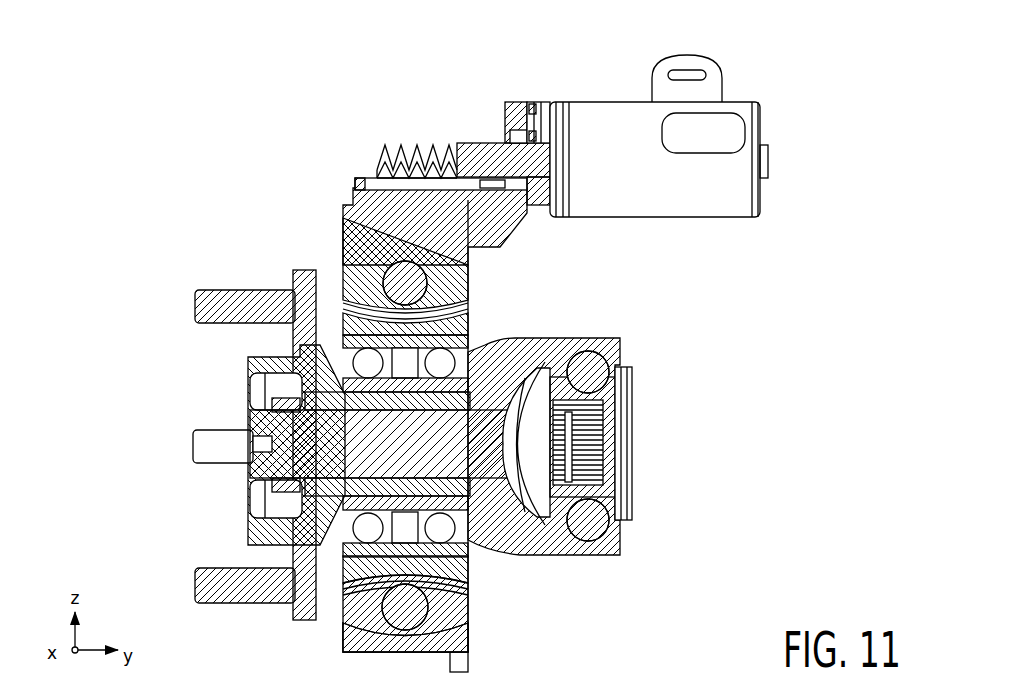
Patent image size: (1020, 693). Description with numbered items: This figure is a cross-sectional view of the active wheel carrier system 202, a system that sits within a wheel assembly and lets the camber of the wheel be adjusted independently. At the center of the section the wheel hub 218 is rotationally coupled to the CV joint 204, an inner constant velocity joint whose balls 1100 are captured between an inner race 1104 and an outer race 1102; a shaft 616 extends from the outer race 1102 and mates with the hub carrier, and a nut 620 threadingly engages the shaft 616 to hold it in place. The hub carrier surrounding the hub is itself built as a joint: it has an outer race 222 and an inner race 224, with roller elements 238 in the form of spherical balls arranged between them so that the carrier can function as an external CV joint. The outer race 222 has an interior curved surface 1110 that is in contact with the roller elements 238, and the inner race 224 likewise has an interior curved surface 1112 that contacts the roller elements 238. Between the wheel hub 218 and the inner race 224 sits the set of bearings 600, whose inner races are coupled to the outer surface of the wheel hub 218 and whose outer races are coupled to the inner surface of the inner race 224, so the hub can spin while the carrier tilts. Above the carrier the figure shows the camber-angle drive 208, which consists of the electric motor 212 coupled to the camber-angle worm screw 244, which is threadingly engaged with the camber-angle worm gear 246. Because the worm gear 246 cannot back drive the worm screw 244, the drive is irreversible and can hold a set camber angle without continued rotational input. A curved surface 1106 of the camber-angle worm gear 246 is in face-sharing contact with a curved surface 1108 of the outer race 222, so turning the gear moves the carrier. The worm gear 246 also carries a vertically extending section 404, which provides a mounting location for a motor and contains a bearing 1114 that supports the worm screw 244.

The active wheel carrier system 202 is at (130, 125).
The CV joint 204 is at (658, 350).
The camber-angle drive 208 is at (828, 120).
The electric motor 212 is at (620, 88).
The wheel hub 218 is at (158, 298).
The outer race 222 is at (318, 243).
The inner race 224 is at (333, 316).
The roller elements 238 is at (430, 287).
The camber-angle worm screw 244 is at (429, 132).
The camber-angle worm gear 246 is at (343, 184).
The section 404 is at (497, 108).
The set of bearings 600 is at (478, 338).
The shaft 616 is at (253, 428).
The nut 620 is at (282, 486).
The balls 1100 is at (612, 380).
The outer race 1102 is at (610, 550).
The inner race 1104 is at (613, 405).
The surface 1106 is at (440, 228).
The surface 1108 is at (393, 207).
The interior curved surface 1110 is at (430, 628).
The interior curved surface 1112 is at (378, 584).
The bearing 1114 is at (521, 125).